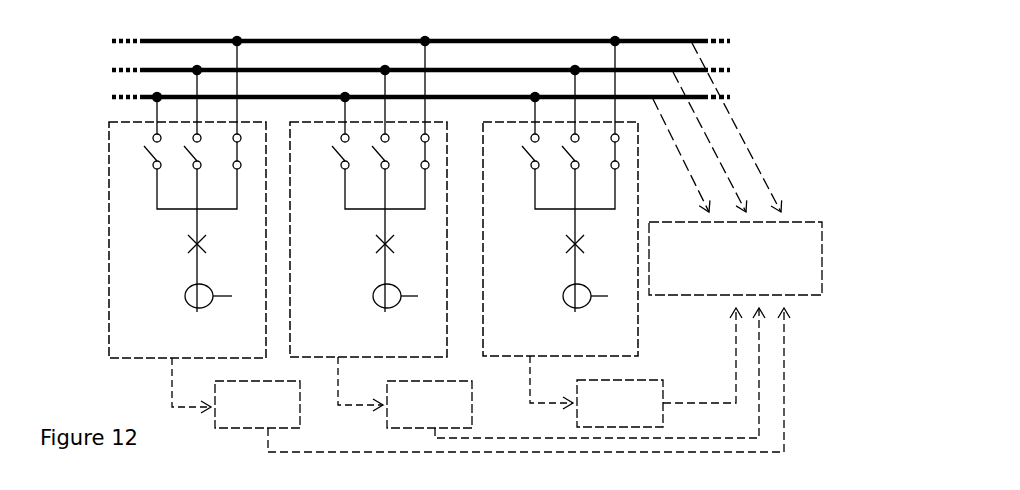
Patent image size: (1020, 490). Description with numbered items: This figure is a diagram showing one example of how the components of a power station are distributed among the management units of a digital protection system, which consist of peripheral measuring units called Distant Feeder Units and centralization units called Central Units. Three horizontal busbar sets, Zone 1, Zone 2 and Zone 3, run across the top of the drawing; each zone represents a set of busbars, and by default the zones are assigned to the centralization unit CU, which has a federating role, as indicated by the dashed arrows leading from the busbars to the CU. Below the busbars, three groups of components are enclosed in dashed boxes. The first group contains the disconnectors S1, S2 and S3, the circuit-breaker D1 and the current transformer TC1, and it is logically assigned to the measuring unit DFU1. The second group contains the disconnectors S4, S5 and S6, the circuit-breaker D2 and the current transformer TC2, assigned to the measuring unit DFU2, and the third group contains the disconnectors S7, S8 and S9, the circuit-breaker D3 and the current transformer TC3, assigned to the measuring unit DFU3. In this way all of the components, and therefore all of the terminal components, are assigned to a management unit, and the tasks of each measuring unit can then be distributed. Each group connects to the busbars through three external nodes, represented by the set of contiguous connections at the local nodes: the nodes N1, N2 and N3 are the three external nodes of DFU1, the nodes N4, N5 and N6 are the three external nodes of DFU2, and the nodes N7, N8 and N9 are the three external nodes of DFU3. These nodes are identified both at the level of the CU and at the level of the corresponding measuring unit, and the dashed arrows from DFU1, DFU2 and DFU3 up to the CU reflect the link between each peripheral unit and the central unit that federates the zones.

The local node N1 is at (222, 75).
The local node N2 is at (183, 90).
The local node N3 is at (141, 104).
The local node N4 is at (410, 75).
The local node N5 is at (371, 90).
The local node N6 is at (329, 104).
The local node N7 is at (629, 74).
The local node N8 is at (589, 90).
The local node N9 is at (548, 103).
The disconnector S1 is at (140, 151).
The disconnector S2 is at (181, 151).
The disconnector S3 is at (226, 151).
The disconnector S4 is at (328, 151).
The disconnector S5 is at (372, 151).
The disconnector S6 is at (414, 151).
The disconnector S7 is at (518, 151).
The disconnector S8 is at (559, 151).
The disconnector S9 is at (603, 151).
The circuit-breaker D1 is at (183, 244).
The circuit-breaker D2 is at (371, 244).
The circuit-breaker D3 is at (561, 244).
The current transformer TC1 is at (188, 296).
The current transformer TC2 is at (374, 296).
The current transformer TC3 is at (564, 296).
The peripheral measuring unit DFU1 is at (257, 404).
The peripheral measuring unit DFU2 is at (429, 404).
The peripheral measuring unit DFU3 is at (620, 403).
The centralization unit CU is at (735, 258).
The zone Zone 1 is at (421, 28).
The zone Zone 2 is at (421, 57).
The zone Zone 3 is at (421, 84).